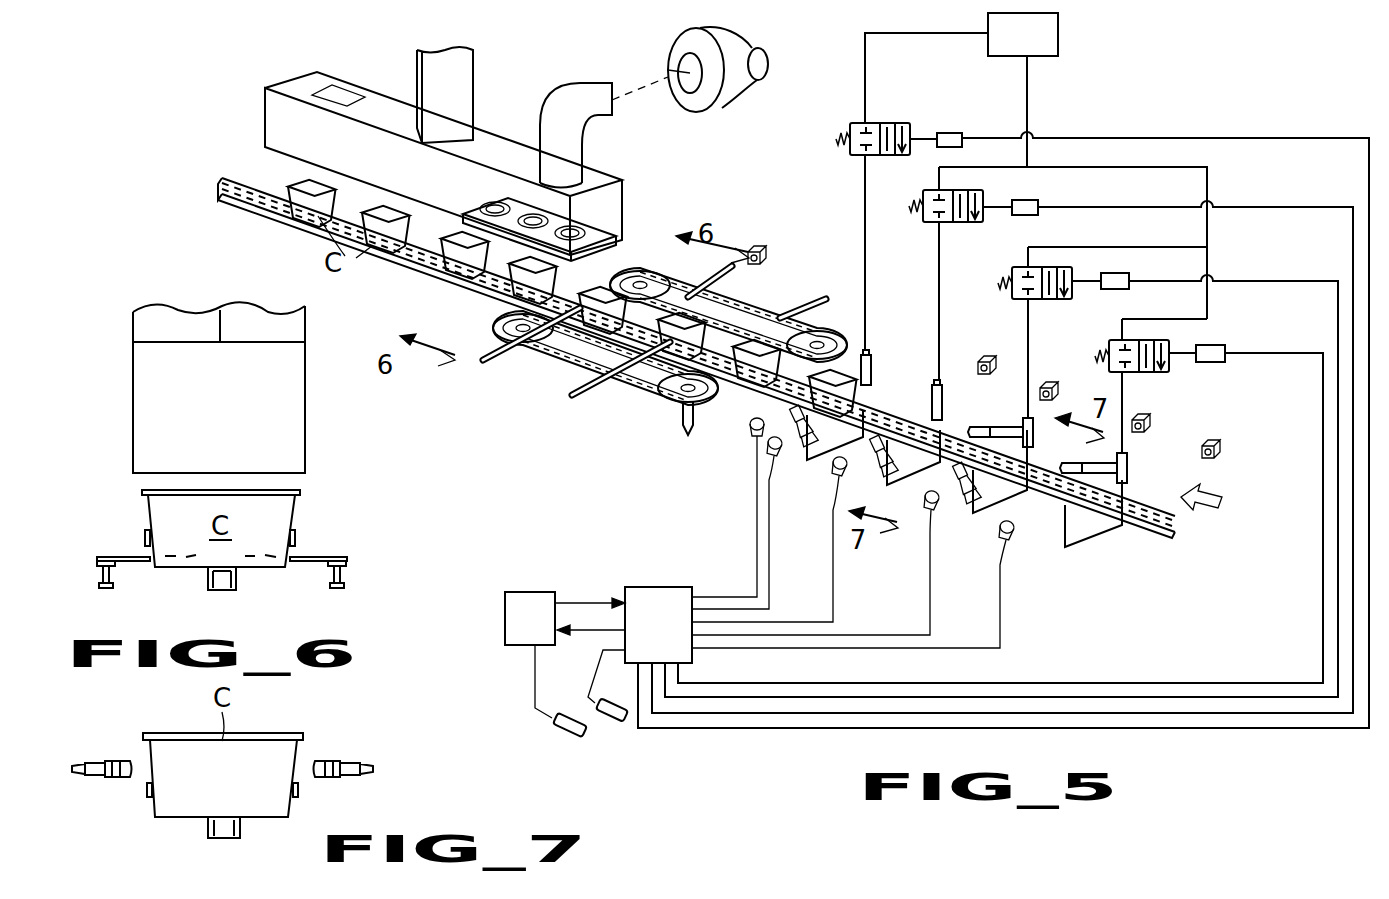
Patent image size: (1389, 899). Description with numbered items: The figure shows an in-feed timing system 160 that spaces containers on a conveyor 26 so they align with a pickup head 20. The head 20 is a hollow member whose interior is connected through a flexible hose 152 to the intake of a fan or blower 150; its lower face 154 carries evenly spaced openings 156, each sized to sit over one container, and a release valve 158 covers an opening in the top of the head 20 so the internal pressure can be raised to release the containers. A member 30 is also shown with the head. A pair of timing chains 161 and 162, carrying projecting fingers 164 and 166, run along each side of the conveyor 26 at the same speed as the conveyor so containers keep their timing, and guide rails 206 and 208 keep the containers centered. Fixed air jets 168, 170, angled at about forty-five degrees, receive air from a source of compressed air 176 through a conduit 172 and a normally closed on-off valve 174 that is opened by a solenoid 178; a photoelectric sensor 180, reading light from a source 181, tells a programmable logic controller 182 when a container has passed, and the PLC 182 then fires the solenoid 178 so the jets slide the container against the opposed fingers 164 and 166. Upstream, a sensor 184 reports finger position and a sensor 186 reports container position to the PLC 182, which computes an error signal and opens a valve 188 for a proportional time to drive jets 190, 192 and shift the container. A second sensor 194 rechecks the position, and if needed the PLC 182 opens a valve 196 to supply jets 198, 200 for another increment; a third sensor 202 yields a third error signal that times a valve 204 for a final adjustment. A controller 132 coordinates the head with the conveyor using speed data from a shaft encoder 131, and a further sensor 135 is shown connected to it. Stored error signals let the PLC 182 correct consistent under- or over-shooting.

In FIG. 5, the head 20 is at (265, 110).
In FIG. 6, the head 20 is at (200, 403).
In FIG. 5, the conveyor 26 is at (240, 196).
In FIG. 6, the conveyor 26 is at (222, 591).
In FIG. 7, the conveyor 26 is at (212, 834).
In FIG. 5, the guide plate 30 is at (473, 58).
In FIG. 5, the shaft encoder 131 is at (568, 735).
In FIG. 5, the controller 132 is at (512, 631).
In FIG. 5, the sensor 135 is at (612, 718).
In FIG. 5, the fan or blower 150 is at (752, 54).
In FIG. 5, the flexible hose 152 is at (588, 86).
In FIG. 5, the lower face 154 is at (574, 213).
In FIG. 5, the openings 156 is at (585, 210).
In FIG. 5, the release valve 158 is at (343, 99).
In FIG. 5, the in-feed timing system 160 is at (728, 513).
In FIG. 5, the timing chain 161 is at (514, 326).
In FIG. 6, the timing chain 161 is at (100, 576).
In FIG. 5, the timing chain 162 is at (660, 278).
In FIG. 6, the timing chain 162 is at (348, 576).
In FIG. 5, the projecting fingers 164 is at (614, 367).
In FIG. 6, the projecting fingers 164 is at (118, 557).
In FIG. 5, the projecting fingers 166 is at (731, 300).
In FIG. 6, the projecting fingers 166 is at (340, 557).
In FIG. 5, the air jet 168 is at (795, 408).
In FIG. 5, the air jet 170 is at (800, 296).
In FIG. 5, the conduit 172 is at (865, 182).
In FIG. 5, the on-off valve 174 is at (886, 124).
In FIG. 5, the source of compressed air 176 is at (1060, 40).
In FIG. 5, the solenoid 178 is at (955, 133).
In FIG. 5, the sensor 180 is at (775, 456).
In FIG. 5, the light source 181 is at (981, 354).
In FIG. 5, the programmable logic controller 182 is at (638, 652).
In FIG. 5, the sensor 184 is at (752, 430).
In FIG. 5, the sensor 186 is at (1010, 540).
In FIG. 5, the valve 188 is at (1147, 372).
In FIG. 5, the air jet 190 is at (1050, 494).
In FIG. 5, the air jet 192 is at (1128, 480).
In FIG. 5, the second sensor 194 is at (933, 512).
In FIG. 5, the valve 196 is at (1035, 302).
In FIG. 5, the air jet 198 is at (964, 502).
In FIG. 7, the air jet 198 is at (122, 760).
In FIG. 5, the air jet 200 is at (975, 430).
In FIG. 7, the air jet 200 is at (330, 762).
In FIG. 5, the third sensor 202 is at (841, 478).
In FIG. 5, the valve 204 is at (965, 226).
In FIG. 5, the guide rail 206 is at (812, 445).
In FIG. 6, the guide rail 206 is at (144, 535).
In FIG. 7, the guide rail 206 is at (146, 795).
In FIG. 5, the guide rail 208 is at (940, 410).
In FIG. 6, the guide rail 208 is at (297, 538).
In FIG. 7, the guide rail 208 is at (299, 795).